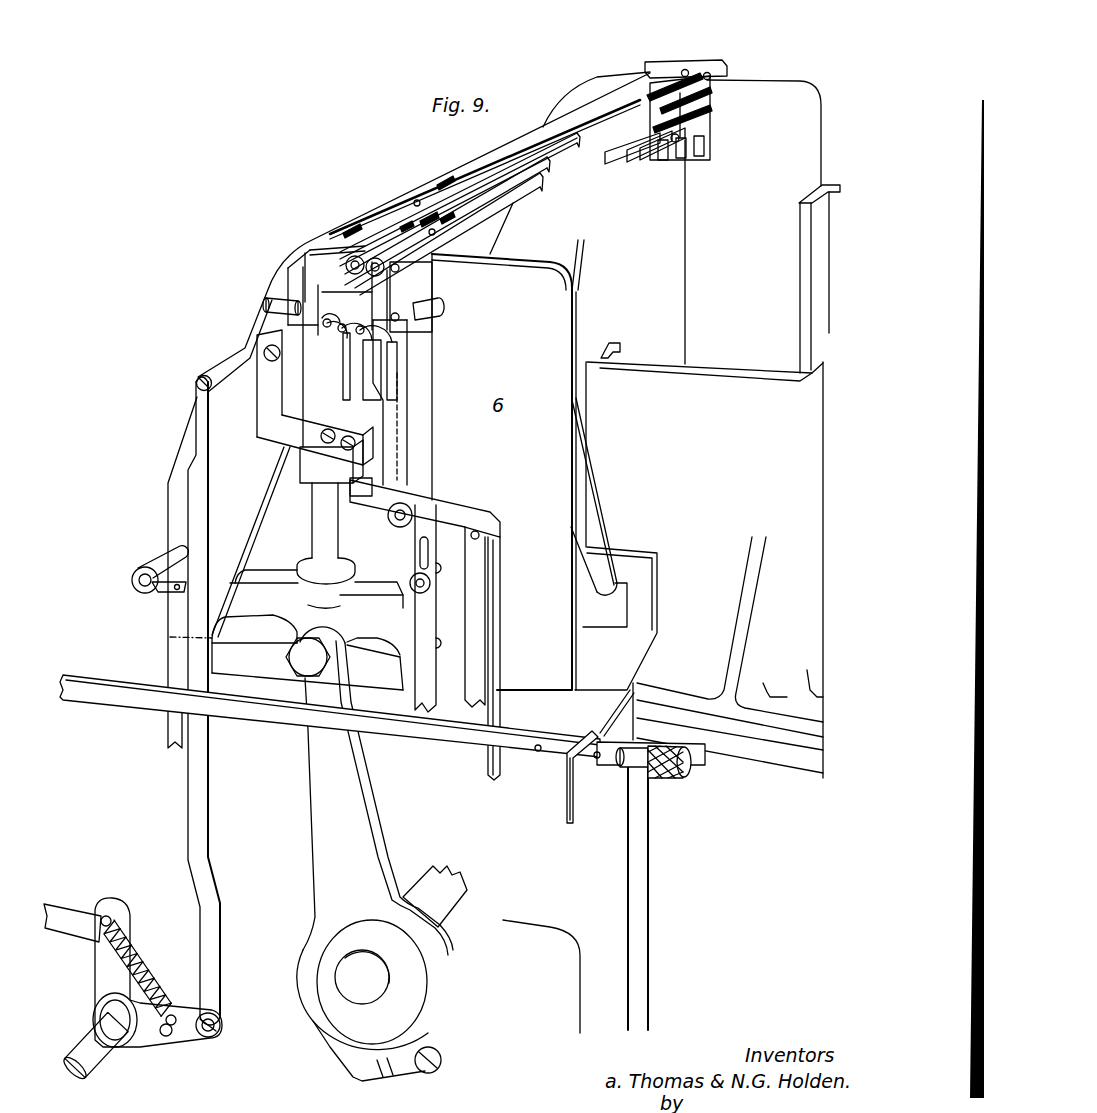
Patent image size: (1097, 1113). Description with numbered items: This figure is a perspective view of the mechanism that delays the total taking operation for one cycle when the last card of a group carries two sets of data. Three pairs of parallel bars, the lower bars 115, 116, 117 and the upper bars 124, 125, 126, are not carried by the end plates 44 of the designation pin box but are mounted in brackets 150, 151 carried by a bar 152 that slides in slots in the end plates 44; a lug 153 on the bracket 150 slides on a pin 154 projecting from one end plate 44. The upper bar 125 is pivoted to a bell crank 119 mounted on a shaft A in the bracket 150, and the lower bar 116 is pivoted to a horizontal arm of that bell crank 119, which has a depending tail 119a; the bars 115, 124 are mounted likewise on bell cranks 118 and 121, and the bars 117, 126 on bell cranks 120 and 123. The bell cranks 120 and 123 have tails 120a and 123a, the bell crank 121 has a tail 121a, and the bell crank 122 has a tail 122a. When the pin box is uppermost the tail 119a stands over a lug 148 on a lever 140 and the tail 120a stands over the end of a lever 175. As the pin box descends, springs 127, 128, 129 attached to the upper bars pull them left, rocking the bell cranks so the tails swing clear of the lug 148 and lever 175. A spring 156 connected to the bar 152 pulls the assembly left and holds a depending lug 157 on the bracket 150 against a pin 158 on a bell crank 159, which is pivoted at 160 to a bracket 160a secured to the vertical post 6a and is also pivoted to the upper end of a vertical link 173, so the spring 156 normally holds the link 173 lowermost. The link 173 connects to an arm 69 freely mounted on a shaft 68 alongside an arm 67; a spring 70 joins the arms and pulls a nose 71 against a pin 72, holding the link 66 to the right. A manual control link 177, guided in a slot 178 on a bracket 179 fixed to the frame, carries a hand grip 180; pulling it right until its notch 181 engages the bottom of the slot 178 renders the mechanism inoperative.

The vertical post 6a is at (330, 525).
The end plate 44 is at (805, 113).
The link 66 is at (78, 906).
The arm 67 is at (113, 978).
The shaft 68 is at (85, 1050).
The arm 69 is at (190, 1034).
The spring 70 is at (143, 963).
The nose 71 is at (150, 1042).
The pin 72 is at (166, 1036).
The lower bar 115 is at (613, 164).
The lower bar 116 is at (635, 162).
The lower bar 117 is at (655, 160).
The bell crank 118 is at (327, 325).
The bell crank 119 is at (340, 330).
The tail 119a is at (362, 487).
The bell crank 120 is at (370, 327).
The tail 120a is at (408, 449).
The bell crank 121 is at (690, 123).
The bell crank 122 is at (690, 108).
The bell crank 123 is at (705, 100).
The tail 121a is at (680, 157).
The tail 122a is at (693, 157).
The tail 123a is at (700, 152).
The upper bar 124 is at (566, 150).
The upper bar 125 is at (545, 175).
The upper bar 126 is at (530, 195).
The spring 127 is at (405, 222).
The spring 128 is at (427, 215).
The spring 129 is at (446, 186).
The lever 140 is at (392, 525).
The lug 148 is at (355, 484).
The bracket 150 is at (330, 277).
The bracket 151 is at (715, 70).
The bar 152 is at (587, 108).
The lug 153 is at (425, 280).
The pin 154 is at (442, 306).
The spring 156 is at (423, 200).
The depending lug 157 is at (287, 283).
The pin 158 is at (265, 305).
The bell crank 159 is at (227, 367).
The pivot 160 is at (268, 359).
The bracket 160a is at (285, 439).
The vertical link 173 is at (196, 496).
The lever 175 is at (447, 503).
The link 177 is at (121, 703).
The slot 178 is at (598, 725).
The bracket 179 is at (620, 767).
The hand grip 180 is at (692, 760).
The notch 181 is at (552, 755).
The shaft A is at (400, 320).